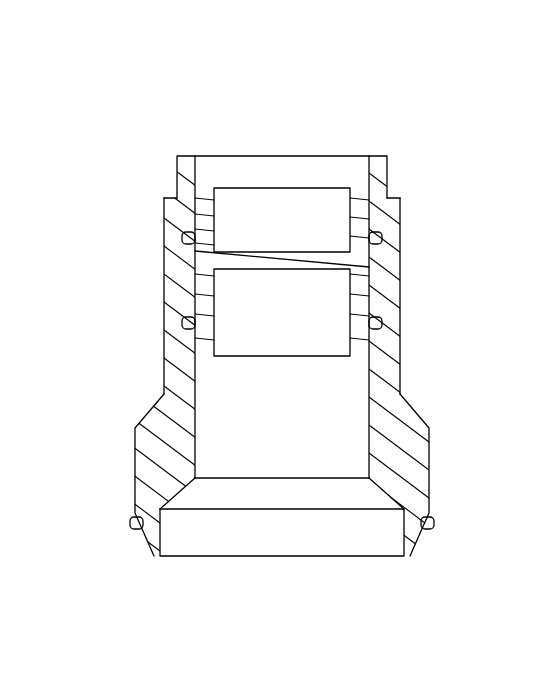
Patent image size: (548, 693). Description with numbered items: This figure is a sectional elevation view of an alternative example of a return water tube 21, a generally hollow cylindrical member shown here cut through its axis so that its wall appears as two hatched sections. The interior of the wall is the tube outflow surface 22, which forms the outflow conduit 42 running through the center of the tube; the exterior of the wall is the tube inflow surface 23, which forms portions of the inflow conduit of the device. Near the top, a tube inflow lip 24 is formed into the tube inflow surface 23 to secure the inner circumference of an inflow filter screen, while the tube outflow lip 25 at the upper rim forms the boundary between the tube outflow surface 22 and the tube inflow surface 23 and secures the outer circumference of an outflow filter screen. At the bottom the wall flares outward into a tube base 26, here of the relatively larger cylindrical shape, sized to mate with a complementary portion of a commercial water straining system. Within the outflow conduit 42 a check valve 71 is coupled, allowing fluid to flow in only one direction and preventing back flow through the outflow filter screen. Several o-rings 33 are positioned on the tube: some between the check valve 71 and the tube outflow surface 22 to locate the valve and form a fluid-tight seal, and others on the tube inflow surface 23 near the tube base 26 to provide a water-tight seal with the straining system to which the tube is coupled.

The return water tube 21 is at (82, 71).
The tube outflow surface 22 is at (195, 431).
The tube inflow surface 23 is at (150, 315).
The tube inflow lip 24 is at (160, 190).
The tube outflow lip 25 is at (183, 150).
The tube base 26 is at (287, 535).
The o-ring 33 is at (174, 231).
The outflow conduit 42 is at (304, 405).
The check valve 71 is at (271, 253).